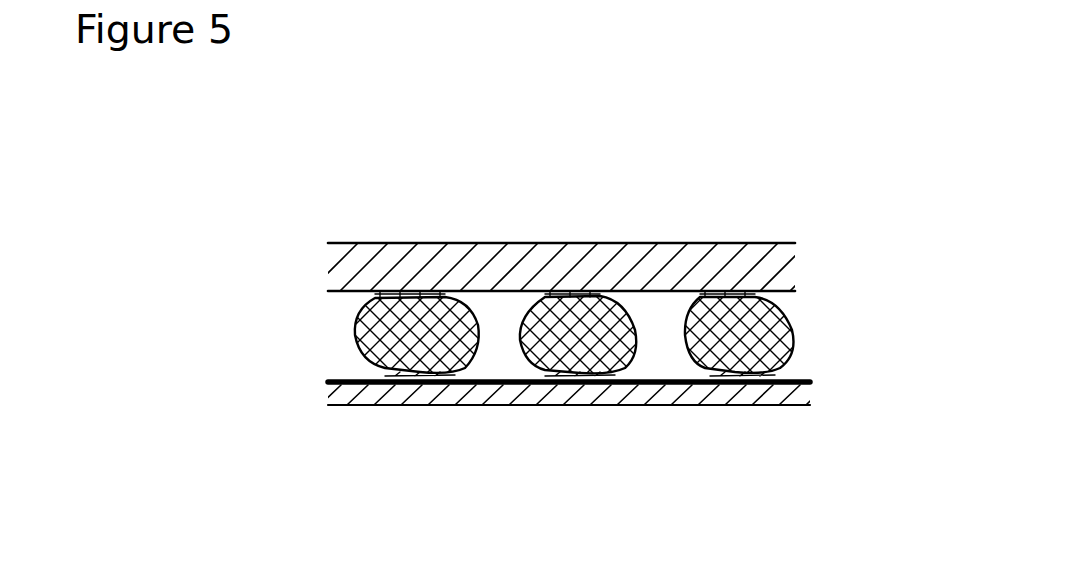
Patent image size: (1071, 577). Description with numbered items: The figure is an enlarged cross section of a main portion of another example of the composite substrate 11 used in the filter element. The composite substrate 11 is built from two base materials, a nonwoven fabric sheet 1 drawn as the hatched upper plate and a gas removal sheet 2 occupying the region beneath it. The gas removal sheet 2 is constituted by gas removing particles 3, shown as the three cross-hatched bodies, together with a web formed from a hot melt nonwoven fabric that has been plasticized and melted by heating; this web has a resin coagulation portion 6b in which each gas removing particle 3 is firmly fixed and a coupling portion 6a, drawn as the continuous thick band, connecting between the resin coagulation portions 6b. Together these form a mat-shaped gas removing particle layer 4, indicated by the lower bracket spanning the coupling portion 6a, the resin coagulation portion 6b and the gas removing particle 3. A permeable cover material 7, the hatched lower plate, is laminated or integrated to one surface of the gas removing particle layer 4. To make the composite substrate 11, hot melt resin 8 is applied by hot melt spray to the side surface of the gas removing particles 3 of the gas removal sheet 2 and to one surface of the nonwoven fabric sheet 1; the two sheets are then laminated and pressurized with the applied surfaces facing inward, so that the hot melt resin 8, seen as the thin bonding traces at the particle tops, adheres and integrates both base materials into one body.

The composite substrate 11 is at (788, 208).
The nonwoven fabric sheet 1 is at (775, 277).
The gas removal sheet 2 is at (820, 407).
The gas removing particle 3 is at (443, 477).
The gas removing particle layer 4 is at (569, 418).
The coupling portion 6a is at (497, 384).
The resin coagulation portion 6b is at (556, 378).
The permeable cover material 7 is at (745, 395).
The hot melt resin 8 is at (377, 297).